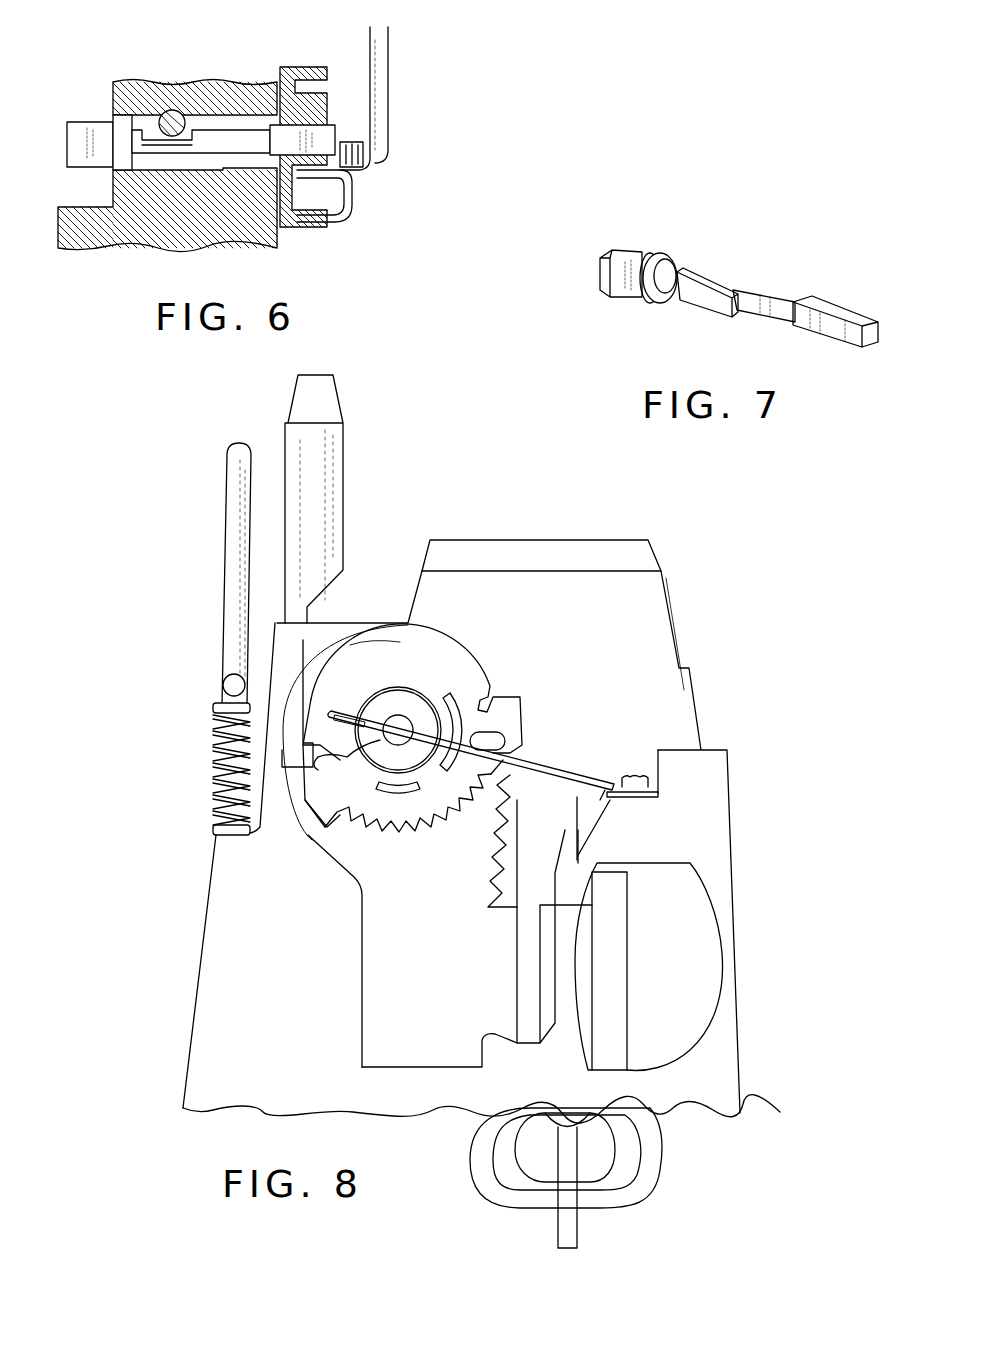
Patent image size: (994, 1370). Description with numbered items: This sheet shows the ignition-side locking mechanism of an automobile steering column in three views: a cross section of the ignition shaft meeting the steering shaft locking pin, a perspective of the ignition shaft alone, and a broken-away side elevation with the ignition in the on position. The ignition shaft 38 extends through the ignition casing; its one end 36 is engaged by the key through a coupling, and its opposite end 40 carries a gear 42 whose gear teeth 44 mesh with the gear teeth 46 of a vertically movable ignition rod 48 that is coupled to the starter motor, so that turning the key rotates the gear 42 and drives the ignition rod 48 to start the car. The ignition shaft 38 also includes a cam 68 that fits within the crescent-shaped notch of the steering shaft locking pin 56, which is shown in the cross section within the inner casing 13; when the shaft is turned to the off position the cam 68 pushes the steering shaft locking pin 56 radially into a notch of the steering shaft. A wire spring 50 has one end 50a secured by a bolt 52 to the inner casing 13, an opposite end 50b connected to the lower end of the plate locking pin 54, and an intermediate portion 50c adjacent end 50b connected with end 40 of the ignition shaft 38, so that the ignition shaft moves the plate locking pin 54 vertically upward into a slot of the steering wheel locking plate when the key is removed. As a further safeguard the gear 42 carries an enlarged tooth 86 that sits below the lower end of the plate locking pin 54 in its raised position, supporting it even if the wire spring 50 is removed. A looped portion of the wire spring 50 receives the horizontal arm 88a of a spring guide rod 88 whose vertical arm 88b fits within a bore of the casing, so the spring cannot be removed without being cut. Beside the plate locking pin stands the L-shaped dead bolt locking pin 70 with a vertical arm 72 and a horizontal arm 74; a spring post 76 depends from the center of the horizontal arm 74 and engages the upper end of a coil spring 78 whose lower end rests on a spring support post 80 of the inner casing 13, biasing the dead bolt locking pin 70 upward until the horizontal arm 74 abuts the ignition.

In FIG. 6, the inner casing 13 is at (150, 238).
In FIG. 8, the inner casing 13 is at (708, 803).
In FIG. 6, the one end of ignition shaft 36 is at (92, 122).
In FIG. 7, the one end of ignition shaft 36 is at (600, 252).
In FIG. 6, the ignition shaft 38 is at (228, 128).
In FIG. 7, the ignition shaft 38 is at (640, 303).
In FIG. 8, the ignition shaft 38 is at (398, 714).
In FIG. 6, the opposite end of ignition shaft 40 is at (330, 125).
In FIG. 7, the opposite end of ignition shaft 40 is at (842, 306).
In FIG. 8, the opposite end of ignition shaft 40 is at (378, 742).
In FIG. 6, the gear 42 is at (288, 64).
In FIG. 8, the gear 42 is at (453, 672).
In FIG. 6, the gear teeth 44 is at (302, 68).
In FIG. 8, the gear teeth 44 is at (422, 820).
In FIG. 8, the gear teeth 46 is at (496, 855).
In FIG. 8, the ignition rod 48 is at (525, 942).
In FIG. 6, the wire spring 50 is at (352, 203).
In FIG. 8, the wire spring 50 is at (528, 760).
In FIG. 8, the one end of wire spring 50a is at (613, 785).
In FIG. 6, the opposite end of wire spring 50b is at (358, 140).
In FIG. 8, the opposite end of wire spring 50b is at (362, 760).
In FIG. 8, the intermediate portion 50c is at (362, 645).
In FIG. 8, the bolt 52 is at (632, 775).
In FIG. 8, the plate locking pin 54 is at (338, 480).
In FIG. 6, the steering shaft locking pin 56 is at (170, 110).
In FIG. 7, the cam 68 is at (702, 312).
In FIG. 8, the dead bolt locking pin 70 is at (220, 567).
In FIG. 8, the vertical arm 72 is at (232, 508).
In FIG. 8, the horizontal arm 74 is at (222, 685).
In FIG. 8, the spring post 76 is at (213, 712).
In FIG. 8, the coil spring 78 is at (213, 765).
In FIG. 8, the spring support post 80 is at (213, 830).
In FIG. 8, the enlarged tooth 86 is at (350, 775).
In FIG. 6, the spring guide rod 88 is at (390, 87).
In FIG. 6, the horizontal arm 88a is at (385, 172).
In FIG. 6, the vertical arm 88b is at (384, 50).